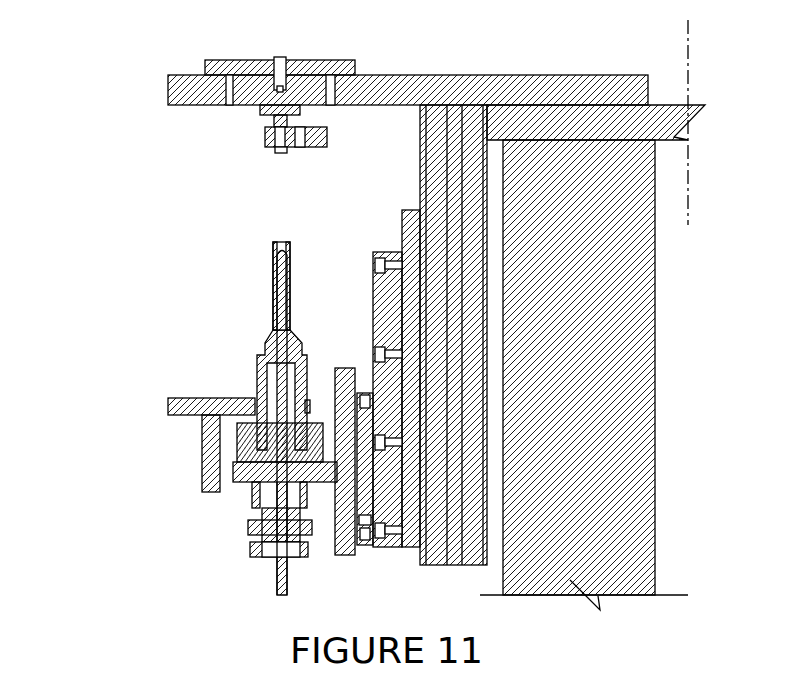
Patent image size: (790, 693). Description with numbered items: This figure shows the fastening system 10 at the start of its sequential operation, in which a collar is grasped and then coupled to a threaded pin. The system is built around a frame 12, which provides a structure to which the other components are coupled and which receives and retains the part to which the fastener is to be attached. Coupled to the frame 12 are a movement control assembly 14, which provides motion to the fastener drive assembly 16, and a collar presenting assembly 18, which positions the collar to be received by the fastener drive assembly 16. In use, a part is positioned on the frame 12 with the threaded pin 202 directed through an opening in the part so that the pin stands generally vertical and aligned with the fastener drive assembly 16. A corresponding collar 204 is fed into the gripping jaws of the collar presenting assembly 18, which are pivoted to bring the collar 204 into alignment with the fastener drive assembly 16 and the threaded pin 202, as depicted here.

The fastening system 10 is at (108, 46).
The frame 12 is at (563, 75).
The movement control assembly 14 is at (408, 318).
The fastener drive assembly 16 is at (249, 310).
The collar presenting assembly 18 is at (249, 137).
The threaded pin 202 is at (278, 57).
The collar 204 is at (280, 152).